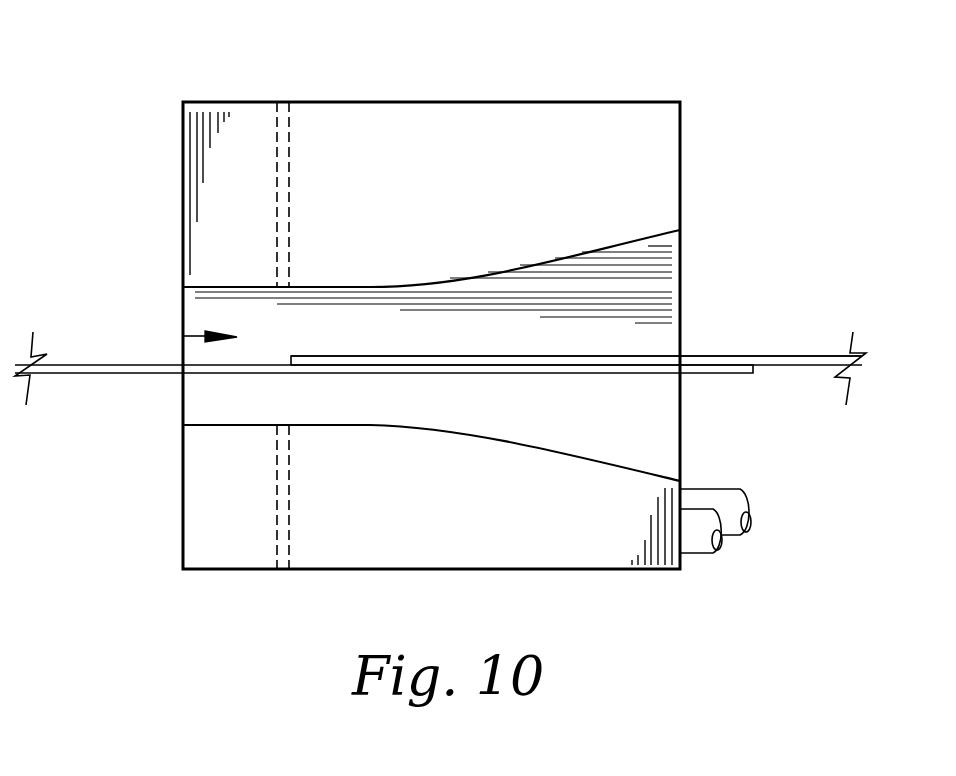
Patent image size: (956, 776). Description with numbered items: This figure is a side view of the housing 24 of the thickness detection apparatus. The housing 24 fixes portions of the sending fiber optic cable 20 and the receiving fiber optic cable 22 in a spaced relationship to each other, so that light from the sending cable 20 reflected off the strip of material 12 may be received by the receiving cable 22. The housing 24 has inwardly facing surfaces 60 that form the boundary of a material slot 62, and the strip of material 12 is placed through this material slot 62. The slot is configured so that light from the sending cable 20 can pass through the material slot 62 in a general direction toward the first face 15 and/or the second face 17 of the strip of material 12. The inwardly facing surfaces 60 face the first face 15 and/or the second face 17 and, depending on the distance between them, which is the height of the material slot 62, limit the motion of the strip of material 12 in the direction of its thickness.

The strip of material 12 is at (722, 356).
The first face 15 is at (418, 356).
The second face 17 is at (452, 373).
The sending fiber optic cable 20 is at (722, 500).
The receiving fiber optic cable 22 is at (698, 545).
The housing 24 is at (590, 128).
The inwardly facing surfaces 60 is at (208, 425).
The material slot 62 is at (183, 333).